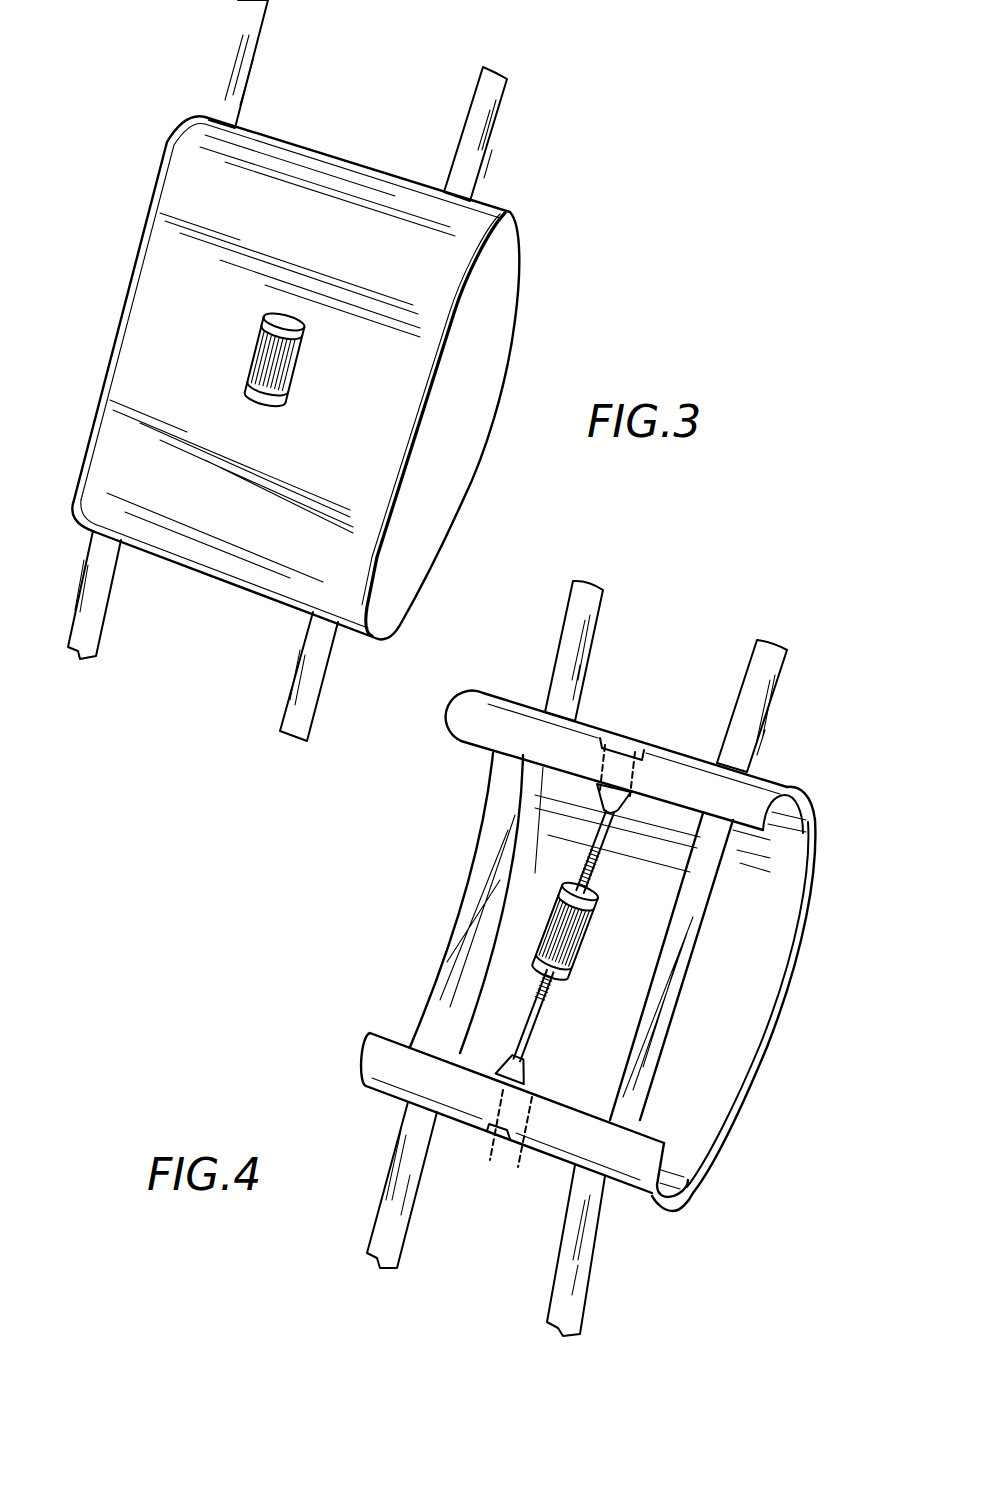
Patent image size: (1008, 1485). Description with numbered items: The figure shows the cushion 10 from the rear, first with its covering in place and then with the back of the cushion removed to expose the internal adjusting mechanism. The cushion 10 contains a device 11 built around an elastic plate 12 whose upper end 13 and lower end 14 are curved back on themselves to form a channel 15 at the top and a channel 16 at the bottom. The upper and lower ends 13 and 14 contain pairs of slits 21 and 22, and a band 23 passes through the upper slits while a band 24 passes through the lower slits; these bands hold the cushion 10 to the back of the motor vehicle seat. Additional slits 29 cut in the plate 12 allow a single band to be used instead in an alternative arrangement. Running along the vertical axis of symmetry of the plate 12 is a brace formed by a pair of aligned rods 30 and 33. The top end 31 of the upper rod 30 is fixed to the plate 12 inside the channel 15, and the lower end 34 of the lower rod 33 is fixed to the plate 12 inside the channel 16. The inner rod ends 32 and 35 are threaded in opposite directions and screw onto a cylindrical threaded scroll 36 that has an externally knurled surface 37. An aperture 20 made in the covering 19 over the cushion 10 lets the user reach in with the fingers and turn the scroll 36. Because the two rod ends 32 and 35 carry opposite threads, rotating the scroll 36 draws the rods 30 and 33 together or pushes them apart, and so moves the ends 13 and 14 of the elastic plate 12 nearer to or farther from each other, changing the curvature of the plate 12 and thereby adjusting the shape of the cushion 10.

In FIG. 3, the cushion 10 is at (144, 158).
In FIG. 4, the device 11 is at (788, 1033).
In FIG. 4, the elastic plate 12 is at (770, 929).
In FIG. 4, the upper end 13 is at (505, 693).
In FIG. 4, the lower end 14 is at (380, 1071).
In FIG. 4, the channel 15 is at (800, 823).
In FIG. 4, the channel 16 is at (685, 1185).
In FIG. 3, the covering 19 is at (340, 560).
In FIG. 3, the aperture 20 is at (287, 372).
In FIG. 4, the slits 21 is at (553, 675).
In FIG. 4, the slits 22 is at (750, 760).
In FIG. 3, the band 23 is at (495, 88).
In FIG. 4, the band 23 is at (768, 645).
In FIG. 3, the band 24 is at (248, 14).
In FIG. 4, the band 24 is at (590, 605).
In FIG. 4, the slits 29 is at (620, 738).
In FIG. 4, the rod 30 is at (575, 797).
In FIG. 4, the top end 31 is at (636, 741).
In FIG. 4, the rod end 32 is at (573, 863).
In FIG. 4, the rod 33 is at (508, 1025).
In FIG. 4, the lower end 34 is at (490, 1152).
In FIG. 4, the rod end 35 is at (552, 987).
In FIG. 3, the cylindrical threaded scroll 36 is at (302, 336).
In FIG. 4, the cylindrical threaded scroll 36 is at (588, 903).
In FIG. 3, the externally knurled surface 37 is at (258, 365).
In FIG. 4, the externally knurled surface 37 is at (550, 932).